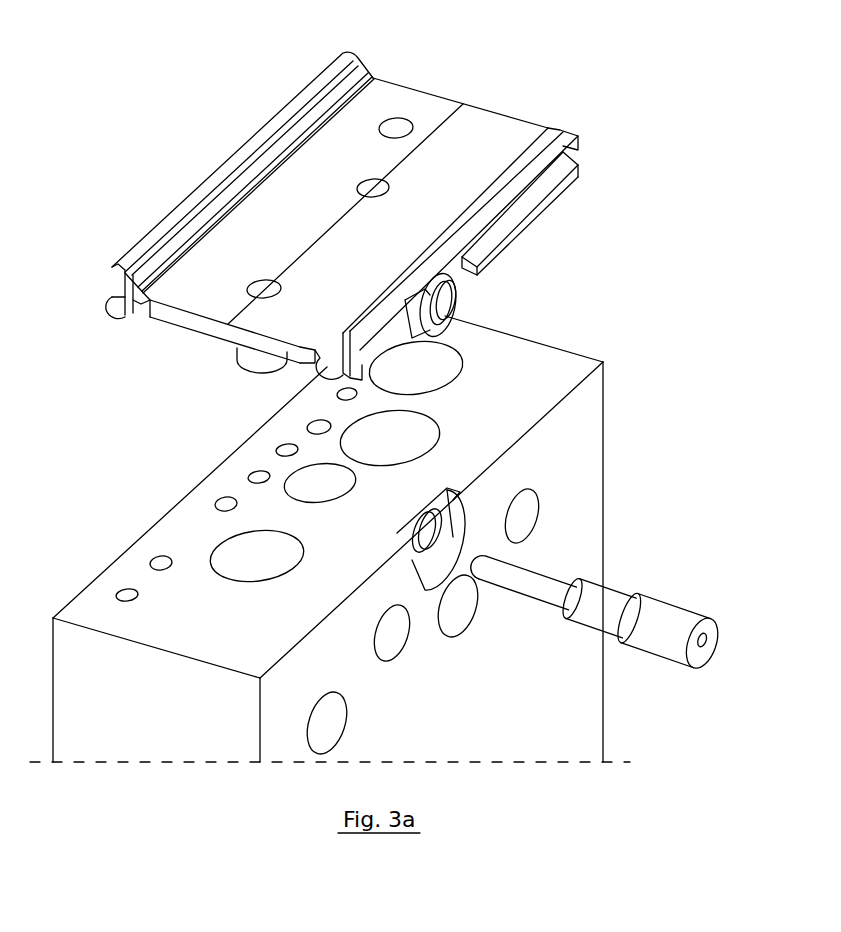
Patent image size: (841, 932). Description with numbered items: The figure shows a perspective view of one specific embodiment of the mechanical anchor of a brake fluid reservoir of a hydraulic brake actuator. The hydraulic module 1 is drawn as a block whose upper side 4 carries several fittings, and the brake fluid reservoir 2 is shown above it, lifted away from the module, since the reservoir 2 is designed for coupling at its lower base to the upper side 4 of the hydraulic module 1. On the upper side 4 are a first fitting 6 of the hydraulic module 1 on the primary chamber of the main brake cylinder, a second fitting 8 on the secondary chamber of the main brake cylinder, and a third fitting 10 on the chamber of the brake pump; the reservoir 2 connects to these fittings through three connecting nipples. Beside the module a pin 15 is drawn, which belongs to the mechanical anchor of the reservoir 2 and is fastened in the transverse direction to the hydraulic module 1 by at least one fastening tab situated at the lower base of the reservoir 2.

The hydraulic module 1 is at (60, 486).
The brake fluid reservoir 2 is at (160, 70).
The upper side 4 is at (516, 366).
The first fitting 6 is at (390, 438).
The second fitting 8 is at (258, 557).
The third fitting 10 is at (413, 367).
The pin 15 is at (650, 602).